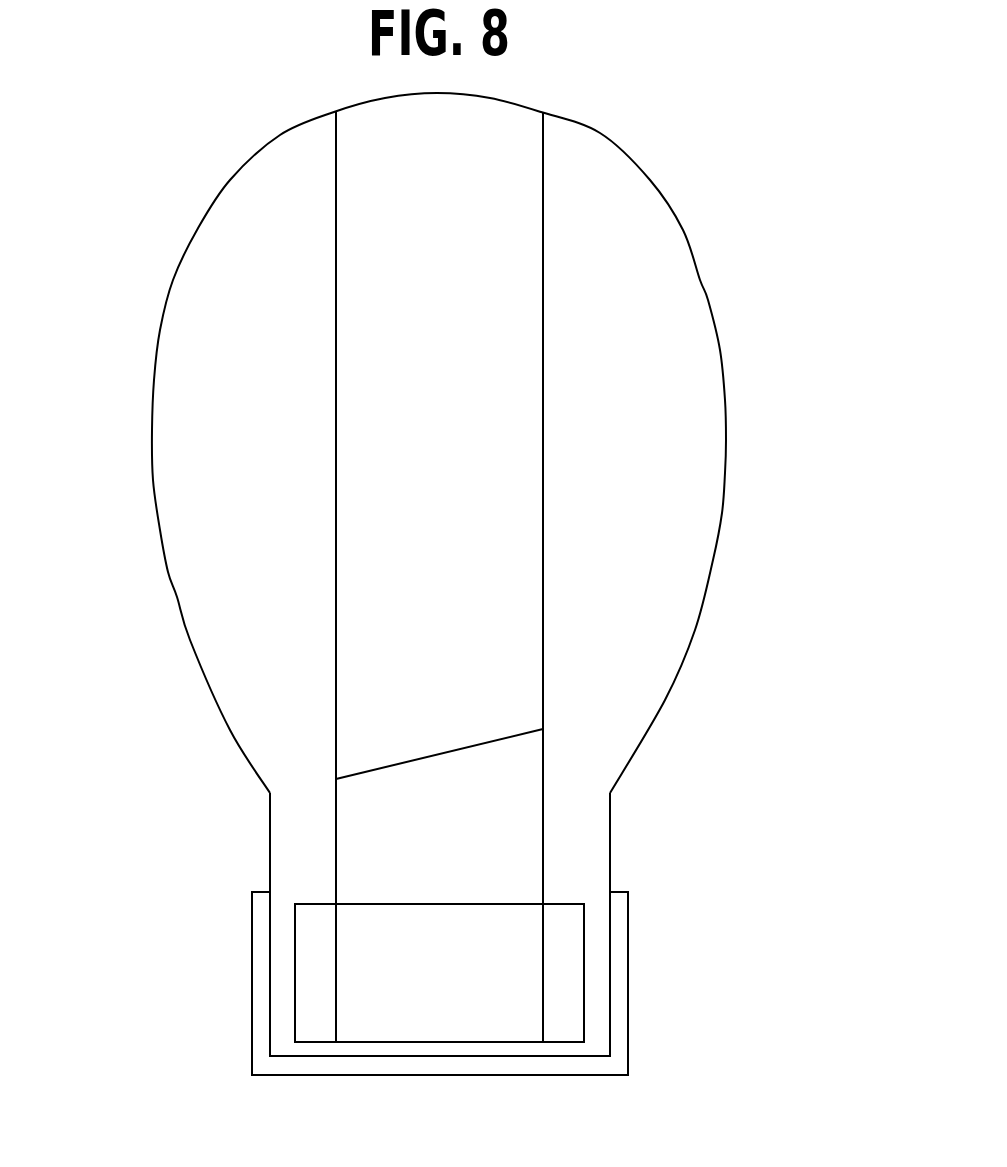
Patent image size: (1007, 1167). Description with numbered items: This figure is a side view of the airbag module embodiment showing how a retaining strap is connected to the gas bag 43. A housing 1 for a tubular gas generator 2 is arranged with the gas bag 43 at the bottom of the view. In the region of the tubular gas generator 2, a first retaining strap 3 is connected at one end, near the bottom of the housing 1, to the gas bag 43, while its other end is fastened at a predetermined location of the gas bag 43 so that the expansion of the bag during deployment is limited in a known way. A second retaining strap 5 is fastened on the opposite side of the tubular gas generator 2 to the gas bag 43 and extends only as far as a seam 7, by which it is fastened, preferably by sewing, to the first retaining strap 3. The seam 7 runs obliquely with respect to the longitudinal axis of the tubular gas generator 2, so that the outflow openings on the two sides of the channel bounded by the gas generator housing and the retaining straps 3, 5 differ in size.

The gas bag 43 is at (726, 471).
The first retaining strap 3 is at (405, 573).
The seam 7 is at (505, 740).
The second retaining strap 5 is at (336, 851).
The housing 1 is at (628, 918).
The tubular gas generator 2 is at (543, 968).